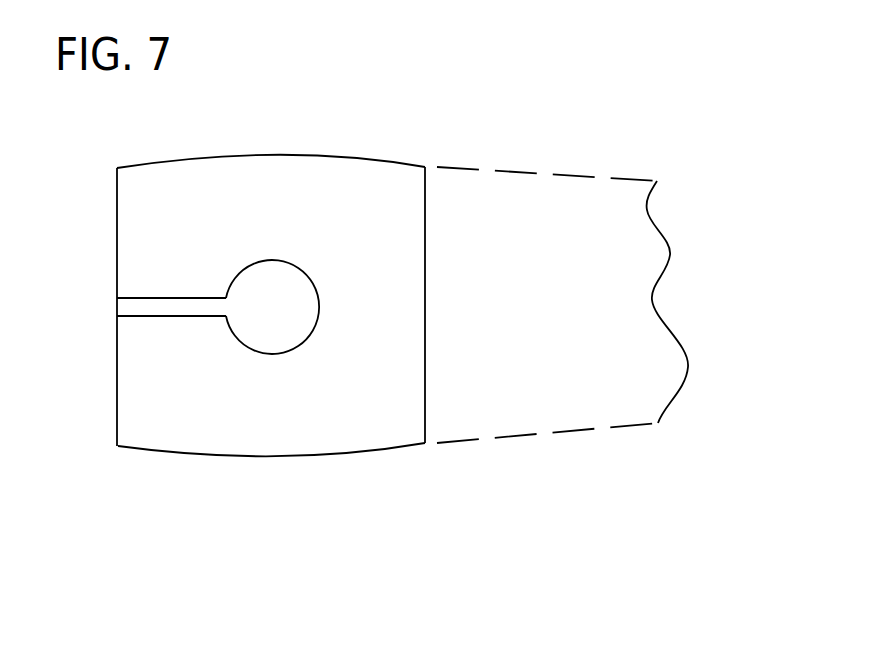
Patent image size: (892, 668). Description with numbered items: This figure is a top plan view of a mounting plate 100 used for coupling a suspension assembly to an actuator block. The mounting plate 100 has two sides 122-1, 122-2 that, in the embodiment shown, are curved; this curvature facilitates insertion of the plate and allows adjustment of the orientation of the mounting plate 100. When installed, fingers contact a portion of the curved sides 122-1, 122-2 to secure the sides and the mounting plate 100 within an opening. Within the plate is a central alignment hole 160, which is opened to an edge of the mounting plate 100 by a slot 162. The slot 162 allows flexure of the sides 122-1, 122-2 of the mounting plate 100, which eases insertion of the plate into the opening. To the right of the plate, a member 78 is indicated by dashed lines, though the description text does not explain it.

The carrier member 78 is at (525, 172).
The mounting plate 100 is at (383, 268).
The side 122-1 is at (283, 155).
The side 122-2 is at (300, 457).
The central alignment hole 160 is at (293, 263).
The slot 162 is at (137, 316).